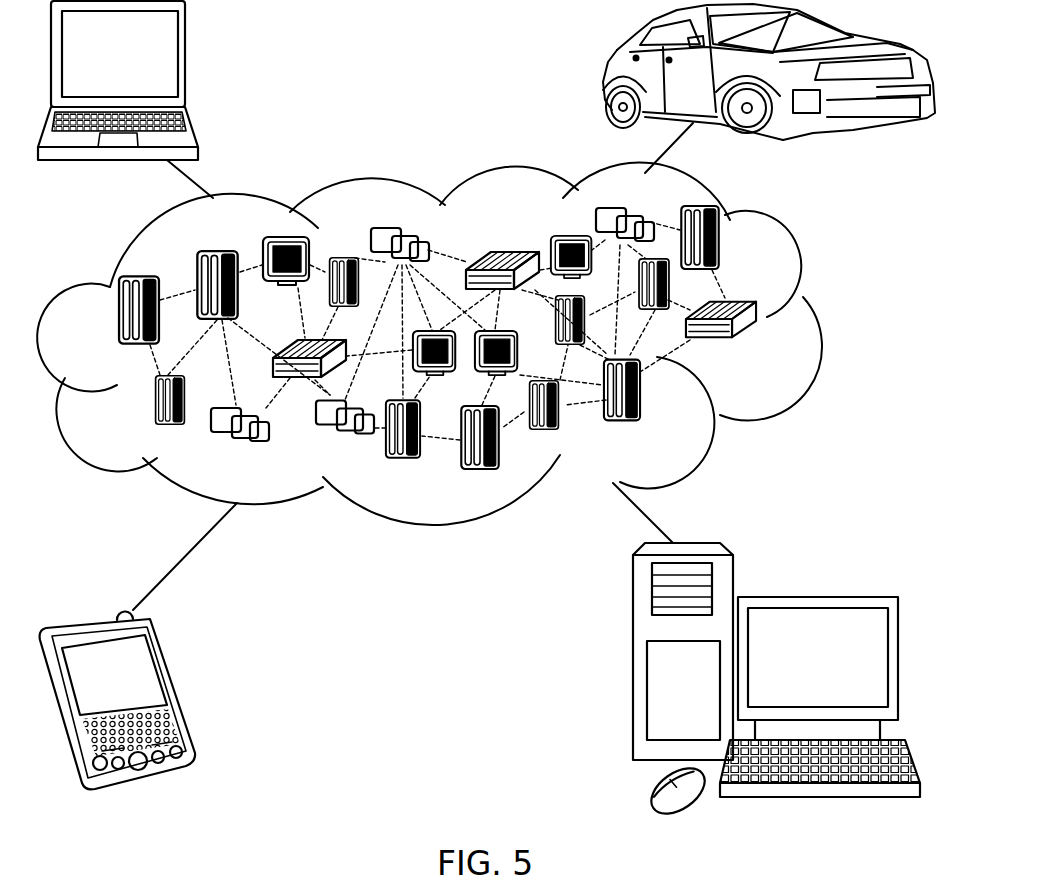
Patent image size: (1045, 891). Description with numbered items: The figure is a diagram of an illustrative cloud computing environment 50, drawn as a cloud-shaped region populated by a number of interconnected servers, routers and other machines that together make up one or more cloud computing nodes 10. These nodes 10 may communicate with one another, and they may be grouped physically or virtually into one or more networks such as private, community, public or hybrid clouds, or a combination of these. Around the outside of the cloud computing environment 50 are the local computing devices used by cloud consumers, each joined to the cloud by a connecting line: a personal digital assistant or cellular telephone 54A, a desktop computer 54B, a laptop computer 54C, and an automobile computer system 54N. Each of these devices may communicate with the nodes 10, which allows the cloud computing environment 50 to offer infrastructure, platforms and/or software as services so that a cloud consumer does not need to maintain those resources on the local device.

The cloud computing node 10 is at (764, 351).
The cloud computing environment 50 is at (818, 320).
The personal digital assistant (PDA) or cellular telephone 54A is at (170, 688).
The desktop computer 54B is at (813, 597).
The laptop computer 54C is at (187, 62).
The automobile computer system 54N is at (603, 77).